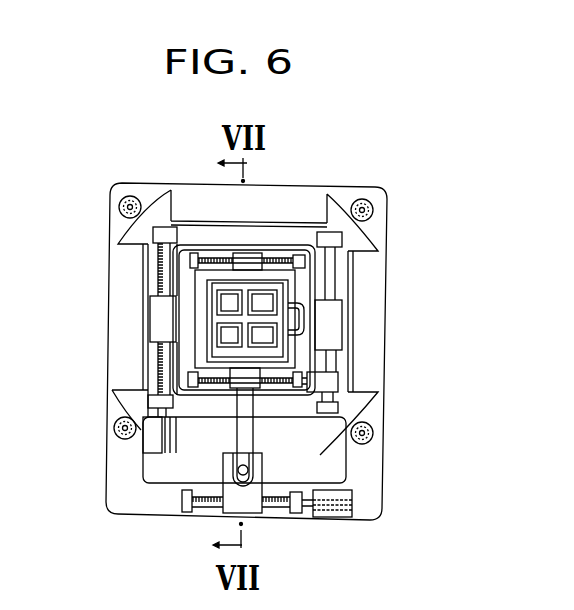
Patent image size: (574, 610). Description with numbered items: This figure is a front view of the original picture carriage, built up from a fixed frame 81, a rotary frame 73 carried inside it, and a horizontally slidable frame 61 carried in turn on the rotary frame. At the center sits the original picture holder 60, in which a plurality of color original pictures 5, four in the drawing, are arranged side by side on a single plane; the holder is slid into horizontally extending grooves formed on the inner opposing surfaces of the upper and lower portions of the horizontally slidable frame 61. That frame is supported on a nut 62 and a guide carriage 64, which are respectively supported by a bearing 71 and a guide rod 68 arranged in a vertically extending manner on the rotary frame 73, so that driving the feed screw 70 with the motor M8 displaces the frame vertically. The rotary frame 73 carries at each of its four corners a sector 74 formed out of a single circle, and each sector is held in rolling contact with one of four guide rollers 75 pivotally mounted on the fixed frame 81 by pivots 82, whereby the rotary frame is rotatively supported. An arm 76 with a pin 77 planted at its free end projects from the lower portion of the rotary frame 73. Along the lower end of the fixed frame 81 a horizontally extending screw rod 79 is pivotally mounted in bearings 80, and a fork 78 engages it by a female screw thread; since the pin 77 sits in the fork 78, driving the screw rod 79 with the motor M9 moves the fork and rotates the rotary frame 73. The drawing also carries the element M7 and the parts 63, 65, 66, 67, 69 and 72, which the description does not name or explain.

The color original pictures 5 is at (273, 297).
The original picture holder 60 is at (280, 296).
The horizontally slidable frame 61 is at (292, 358).
The nut 62 is at (252, 391).
The rack 63 is at (285, 388).
The guide carriage 64 is at (255, 253).
The rack 65 is at (283, 259).
The bearing block 66 is at (192, 387).
The slide block 67 is at (343, 328).
The guide rod 68 is at (346, 304).
The slide block 69 is at (150, 316).
The feed screw 70 is at (158, 280).
The bearing 71 is at (152, 236).
The table 72 is at (195, 352).
The rotary frame 73 is at (180, 362).
The sector 74 is at (111, 398).
The guide rollers 75 is at (119, 208).
The arm 76 is at (226, 453).
The pin 77 is at (262, 466).
The fork 78 is at (258, 514).
The screw rod 79 is at (280, 510).
The bearings 80 is at (182, 500).
The fixed frame 81 is at (117, 500).
The pivots 82 is at (117, 441).
The motor M7 is at (338, 382).
The motor M8 is at (158, 446).
The motor M9 is at (338, 516).